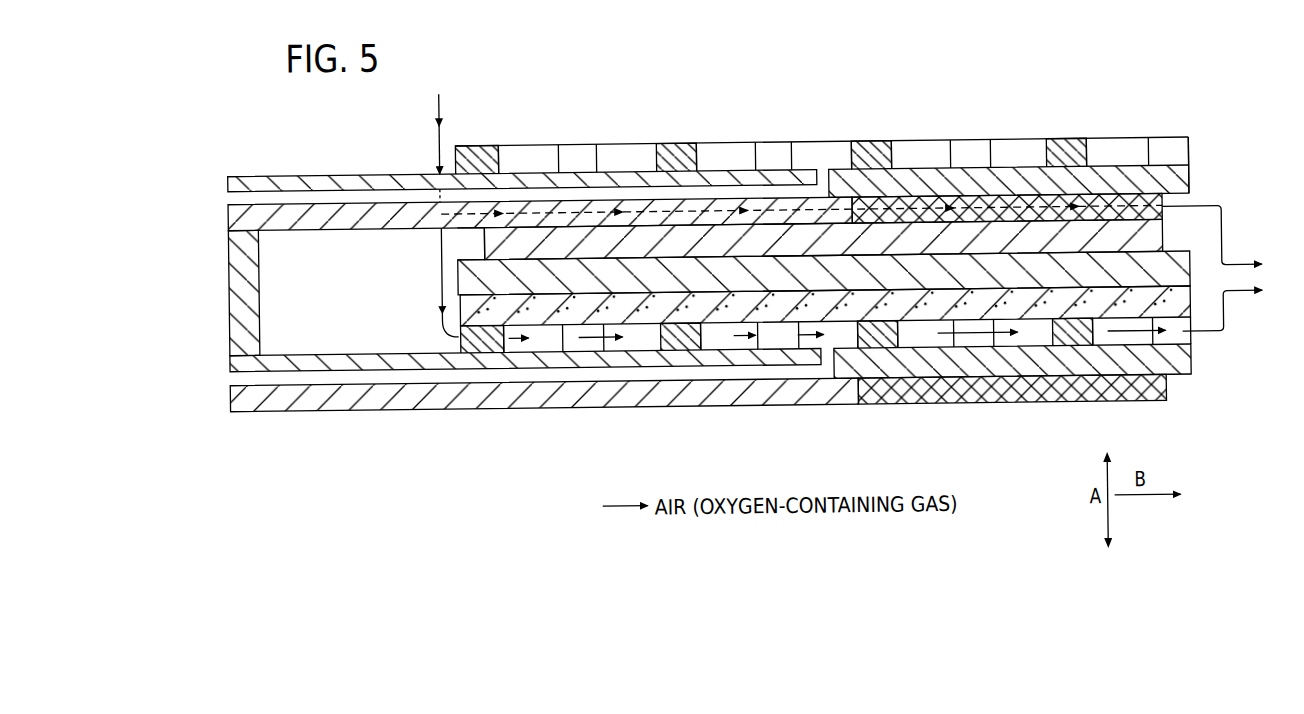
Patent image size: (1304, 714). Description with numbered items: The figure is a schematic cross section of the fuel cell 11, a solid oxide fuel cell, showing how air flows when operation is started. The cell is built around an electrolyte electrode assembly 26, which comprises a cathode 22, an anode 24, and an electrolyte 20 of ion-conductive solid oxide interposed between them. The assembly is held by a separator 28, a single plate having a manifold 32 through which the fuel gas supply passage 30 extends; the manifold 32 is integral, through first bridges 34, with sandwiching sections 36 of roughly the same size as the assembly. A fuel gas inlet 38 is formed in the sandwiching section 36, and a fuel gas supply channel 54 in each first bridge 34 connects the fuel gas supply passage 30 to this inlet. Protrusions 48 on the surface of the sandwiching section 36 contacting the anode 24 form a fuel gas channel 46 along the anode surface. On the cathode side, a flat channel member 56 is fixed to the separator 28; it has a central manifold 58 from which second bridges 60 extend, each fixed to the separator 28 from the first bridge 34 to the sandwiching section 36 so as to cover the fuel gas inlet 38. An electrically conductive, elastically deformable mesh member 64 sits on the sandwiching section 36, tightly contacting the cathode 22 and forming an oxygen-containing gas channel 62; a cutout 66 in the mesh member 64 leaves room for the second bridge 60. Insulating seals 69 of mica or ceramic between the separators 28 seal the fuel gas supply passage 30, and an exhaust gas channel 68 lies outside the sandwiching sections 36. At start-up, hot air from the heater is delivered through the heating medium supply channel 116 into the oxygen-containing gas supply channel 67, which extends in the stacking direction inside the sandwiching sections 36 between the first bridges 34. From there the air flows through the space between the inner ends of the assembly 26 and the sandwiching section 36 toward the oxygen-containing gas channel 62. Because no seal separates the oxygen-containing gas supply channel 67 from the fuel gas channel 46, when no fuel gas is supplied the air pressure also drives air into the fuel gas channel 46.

The fuel cell 11 is at (587, 68).
The electrolyte 20 is at (673, 280).
The cathode 22 is at (715, 240).
The anode 24 is at (642, 313).
The electrolyte electrode assembly 26 is at (743, 440).
The separator 28 is at (1192, 158).
The fuel gas supply passage 30 is at (199, 335).
The manifold 32 is at (245, 358).
The first bridge 34 is at (320, 177).
The sandwiching section 36 is at (1022, 164).
The fuel gas inlet 38 is at (822, 178).
The fuel gas channel 46 is at (721, 155).
The protrusion 48 is at (577, 148).
The fuel gas supply channel 54 is at (367, 193).
The channel member 56 is at (318, 228).
The manifold 58 is at (287, 223).
The second bridge 60 is at (392, 221).
The oxygen-containing gas channel 62 is at (932, 209).
The mesh member 64 is at (990, 197).
The cutout 66 is at (862, 386).
The oxygen-containing gas supply channel 67 is at (352, 339).
The exhaust gas channel 68 is at (1238, 264).
The insulating seal 69 is at (246, 318).
The heating medium supply channel 116 is at (788, 187).